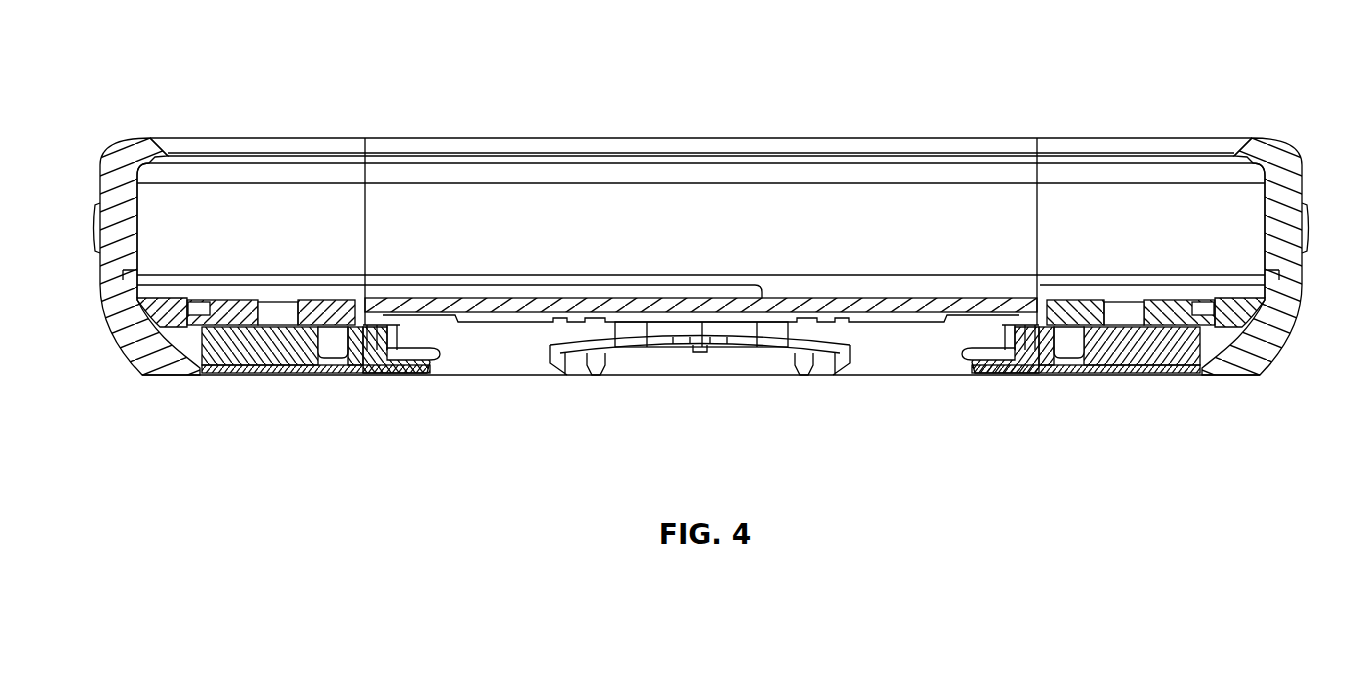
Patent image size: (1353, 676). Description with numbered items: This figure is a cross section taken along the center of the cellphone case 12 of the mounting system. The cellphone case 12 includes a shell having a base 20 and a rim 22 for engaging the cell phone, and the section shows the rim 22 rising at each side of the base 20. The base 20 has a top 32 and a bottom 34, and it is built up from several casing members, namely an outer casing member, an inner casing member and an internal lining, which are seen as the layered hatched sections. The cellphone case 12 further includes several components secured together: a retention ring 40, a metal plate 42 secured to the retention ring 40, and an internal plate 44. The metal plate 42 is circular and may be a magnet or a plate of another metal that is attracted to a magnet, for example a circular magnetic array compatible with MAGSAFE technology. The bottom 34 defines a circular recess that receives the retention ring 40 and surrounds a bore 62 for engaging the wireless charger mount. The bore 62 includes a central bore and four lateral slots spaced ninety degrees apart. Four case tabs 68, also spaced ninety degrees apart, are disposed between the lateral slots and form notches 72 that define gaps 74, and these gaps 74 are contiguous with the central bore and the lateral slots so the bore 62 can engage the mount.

The cellphone case 12 is at (1308, 161).
The base 20 is at (1243, 353).
The rim 22 is at (97, 153).
The top 32 is at (818, 303).
The bottom 34 is at (333, 377).
The retention ring 40 is at (1112, 365).
The metal plate 42 is at (1160, 347).
The internal plate 44 is at (585, 303).
The bore 62 is at (438, 355).
The case tab 68 is at (383, 375).
The notch 72 is at (408, 347).
The gap 74 is at (423, 335).